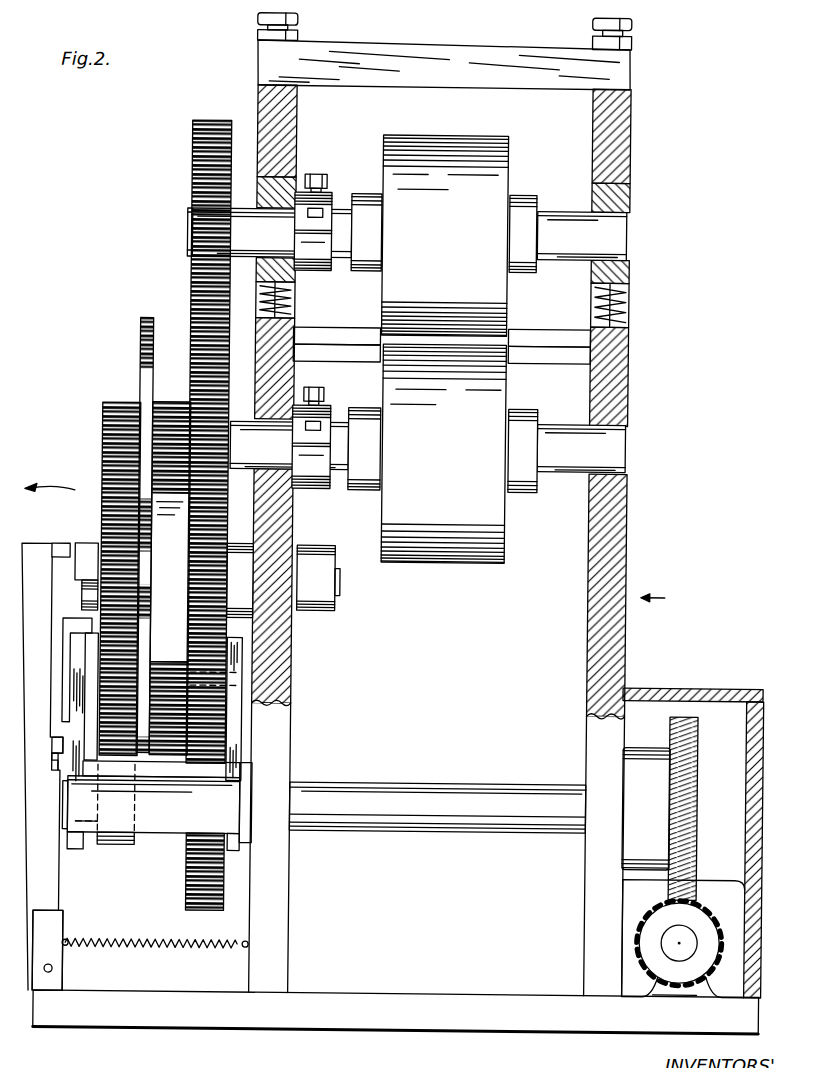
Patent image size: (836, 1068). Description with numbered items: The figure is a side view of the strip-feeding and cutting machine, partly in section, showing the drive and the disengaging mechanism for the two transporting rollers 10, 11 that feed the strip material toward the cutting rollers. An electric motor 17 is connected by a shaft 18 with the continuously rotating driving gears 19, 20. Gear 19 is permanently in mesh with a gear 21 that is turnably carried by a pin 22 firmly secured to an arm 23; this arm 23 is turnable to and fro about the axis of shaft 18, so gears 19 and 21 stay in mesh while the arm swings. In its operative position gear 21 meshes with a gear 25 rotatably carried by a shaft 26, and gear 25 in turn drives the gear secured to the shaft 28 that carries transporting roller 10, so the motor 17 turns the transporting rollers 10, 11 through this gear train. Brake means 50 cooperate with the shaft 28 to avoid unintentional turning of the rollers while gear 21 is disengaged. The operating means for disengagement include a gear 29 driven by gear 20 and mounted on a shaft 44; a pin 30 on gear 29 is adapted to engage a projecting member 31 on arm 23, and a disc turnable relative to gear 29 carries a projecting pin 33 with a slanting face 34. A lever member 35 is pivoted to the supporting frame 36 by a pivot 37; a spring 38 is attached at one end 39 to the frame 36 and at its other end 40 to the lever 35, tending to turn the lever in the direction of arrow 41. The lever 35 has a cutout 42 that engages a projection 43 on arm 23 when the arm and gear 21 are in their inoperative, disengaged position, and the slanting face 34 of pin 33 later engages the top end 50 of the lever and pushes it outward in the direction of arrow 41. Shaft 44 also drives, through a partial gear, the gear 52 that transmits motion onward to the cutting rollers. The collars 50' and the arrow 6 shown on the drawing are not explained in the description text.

The direction of feed arrow 6 is at (665, 589).
The transporting roller 10 is at (414, 546).
The transporting roller 11 is at (388, 286).
The electric motor 17 is at (740, 947).
The shaft 18 is at (492, 807).
The driving gear 19 is at (194, 891).
The driving gear 20 is at (127, 846).
The gear 21 is at (235, 730).
The pin 22 is at (254, 676).
The arm 23 is at (238, 810).
The gear 25 is at (230, 520).
The shaft 26 is at (250, 428).
The shaft 28 is at (563, 260).
The gear 29 is at (119, 404).
The pin 30 is at (91, 591).
The projecting member 31 is at (90, 627).
The projecting pin 33 is at (97, 686).
The slanting face 34 is at (94, 662).
The lever member 35 is at (39, 552).
The supporting frame 36 is at (341, 1008).
The pivot 37 is at (63, 968).
The spring 38 is at (168, 946).
The end of spring 39 is at (255, 947).
The end of spring 40 is at (73, 934).
The arrow 41 is at (60, 491).
The cutout 42 is at (60, 762).
The projection 43 is at (68, 737).
The shaft 44 is at (336, 606).
The top end of lever 50 is at (70, 532).
The collar 50' is at (324, 351).
The gear 52 is at (167, 403).